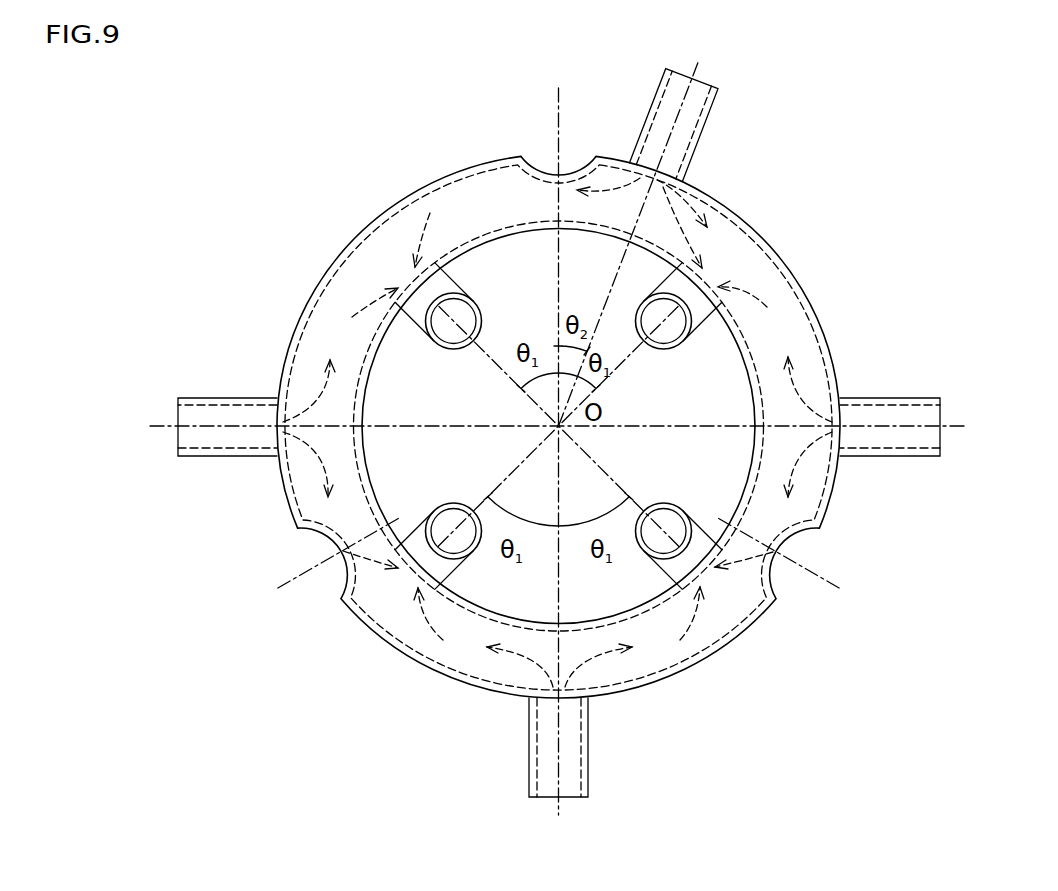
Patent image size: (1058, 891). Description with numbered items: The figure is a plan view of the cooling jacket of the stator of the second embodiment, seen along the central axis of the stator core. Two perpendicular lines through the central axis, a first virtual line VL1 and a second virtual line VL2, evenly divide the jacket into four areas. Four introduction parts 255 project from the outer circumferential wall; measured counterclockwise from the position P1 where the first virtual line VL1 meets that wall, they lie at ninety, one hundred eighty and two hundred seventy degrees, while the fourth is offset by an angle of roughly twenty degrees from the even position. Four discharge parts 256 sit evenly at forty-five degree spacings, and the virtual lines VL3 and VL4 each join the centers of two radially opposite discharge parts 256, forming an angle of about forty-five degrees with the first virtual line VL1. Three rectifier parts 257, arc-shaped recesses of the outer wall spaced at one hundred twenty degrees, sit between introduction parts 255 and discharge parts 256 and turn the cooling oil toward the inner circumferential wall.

The introduction part 255 is at (708, 128).
The discharge part 256 is at (436, 506).
The rectifier part 257 is at (597, 158).
The first virtual line VL1 is at (556, 95).
The second virtual line VL2 is at (546, 402).
The virtual line VL3 is at (700, 570).
The virtual line VL4 is at (418, 570).
The position P1 is at (556, 171).